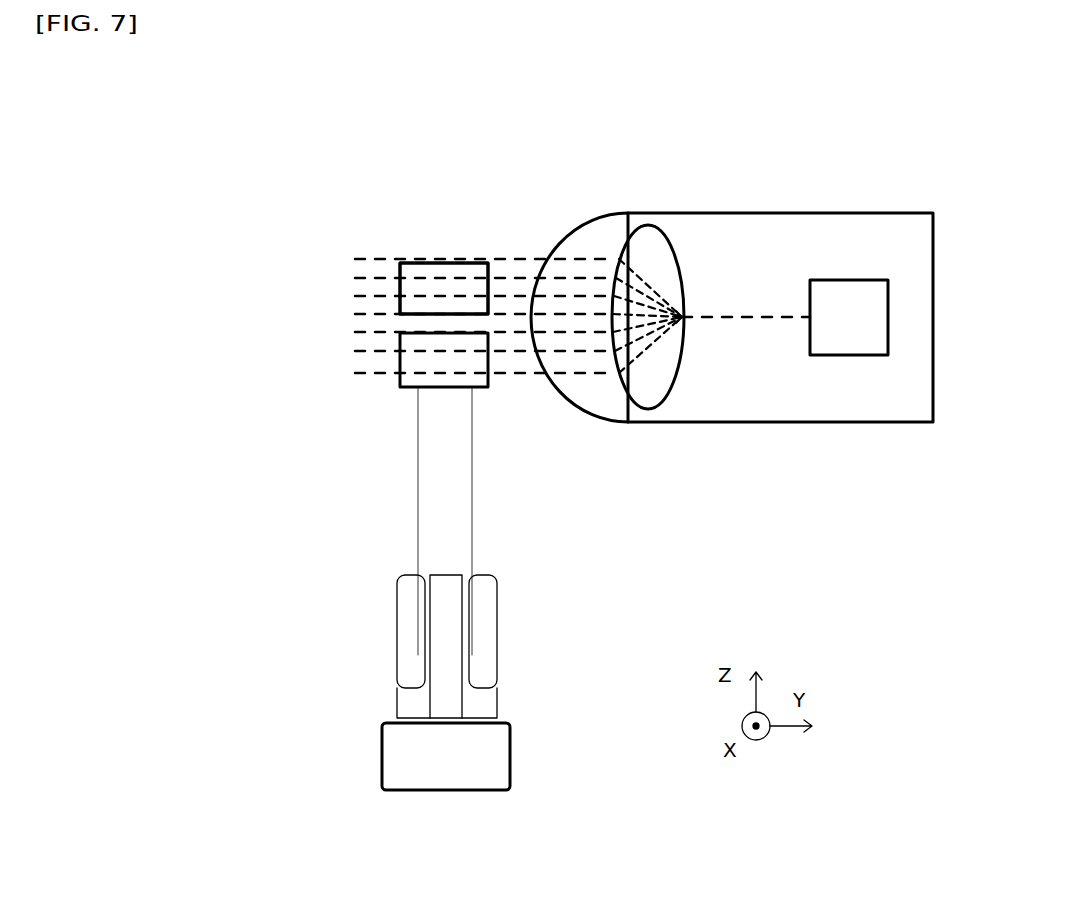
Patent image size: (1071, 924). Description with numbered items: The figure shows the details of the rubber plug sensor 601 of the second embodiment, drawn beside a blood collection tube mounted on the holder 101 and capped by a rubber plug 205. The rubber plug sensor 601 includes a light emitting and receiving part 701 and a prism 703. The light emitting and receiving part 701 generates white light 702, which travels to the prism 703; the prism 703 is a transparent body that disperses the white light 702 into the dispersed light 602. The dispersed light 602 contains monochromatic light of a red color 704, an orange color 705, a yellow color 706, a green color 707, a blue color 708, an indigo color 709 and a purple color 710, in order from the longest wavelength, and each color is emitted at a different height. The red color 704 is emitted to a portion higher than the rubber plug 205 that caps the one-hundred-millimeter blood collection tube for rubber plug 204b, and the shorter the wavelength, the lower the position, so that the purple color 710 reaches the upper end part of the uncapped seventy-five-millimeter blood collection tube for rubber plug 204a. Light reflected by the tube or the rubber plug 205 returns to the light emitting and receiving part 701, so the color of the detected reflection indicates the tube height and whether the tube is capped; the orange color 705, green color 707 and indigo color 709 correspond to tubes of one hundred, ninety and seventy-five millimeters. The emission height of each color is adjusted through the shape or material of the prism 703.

The holder 101 is at (483, 742).
The 75-mm blood collection tube for rubber plug 204a is at (435, 492).
The 100-mm blood collection tube for rubber plug 204b is at (428, 317).
The rubber plug 205 is at (462, 273).
The rubber plug sensor 601 is at (848, 110).
The dispersed light 602 is at (160, 170).
The light emitting and receiving part 701 is at (843, 302).
The white light 702 is at (732, 318).
The prism 703 is at (647, 247).
The red color 704 is at (362, 258).
The orange color 705 is at (363, 278).
The yellow color 706 is at (363, 297).
The green color 707 is at (363, 315).
The blue color 708 is at (362, 333).
The indigo color 709 is at (365, 353).
The purple color 710 is at (365, 375).